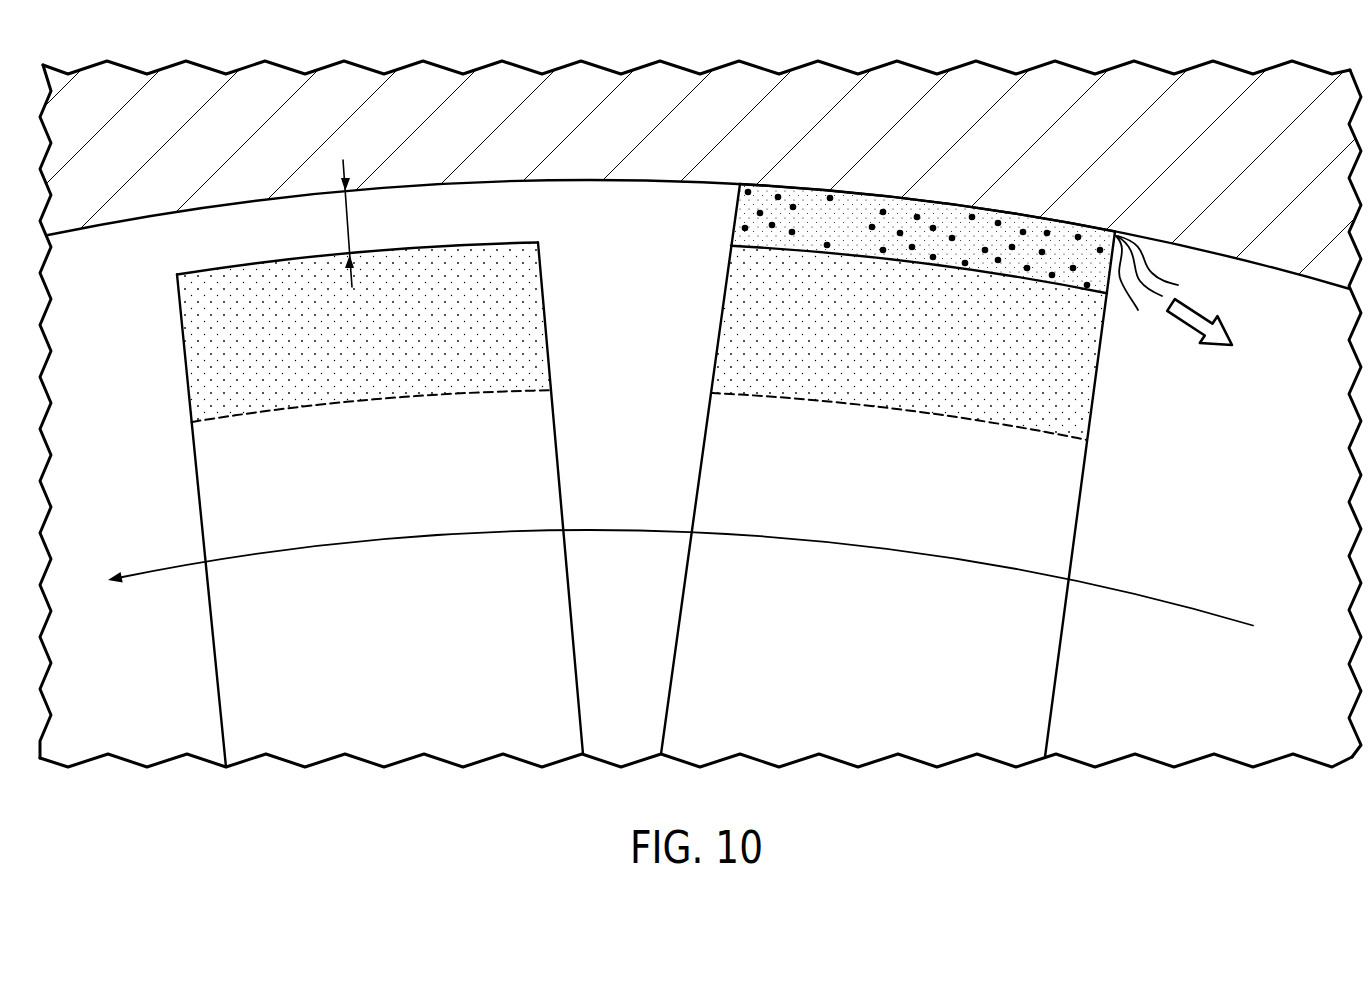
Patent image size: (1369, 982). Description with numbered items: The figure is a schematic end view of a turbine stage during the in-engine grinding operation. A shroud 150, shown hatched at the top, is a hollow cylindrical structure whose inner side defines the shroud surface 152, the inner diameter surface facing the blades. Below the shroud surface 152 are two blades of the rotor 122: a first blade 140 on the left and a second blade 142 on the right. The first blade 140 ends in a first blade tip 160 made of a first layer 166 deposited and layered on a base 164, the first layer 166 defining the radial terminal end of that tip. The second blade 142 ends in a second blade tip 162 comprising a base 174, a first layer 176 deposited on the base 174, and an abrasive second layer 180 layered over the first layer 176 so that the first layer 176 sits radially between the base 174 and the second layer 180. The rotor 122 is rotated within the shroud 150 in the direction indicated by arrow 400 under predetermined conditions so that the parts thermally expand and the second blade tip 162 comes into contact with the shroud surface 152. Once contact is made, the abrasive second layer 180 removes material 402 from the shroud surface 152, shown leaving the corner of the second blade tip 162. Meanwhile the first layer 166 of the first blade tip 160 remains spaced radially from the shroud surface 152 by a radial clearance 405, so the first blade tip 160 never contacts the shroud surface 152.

The rotor 122 is at (1076, 667).
The first blade 140 is at (200, 638).
The second blade 142 is at (688, 465).
The shroud 150 is at (717, 138).
The shroud surface 152 is at (653, 184).
The first blade tip 160 is at (250, 264).
The second blade tip 162 is at (873, 196).
The base 164 is at (412, 606).
The first layer 166 is at (388, 347).
The base 174 is at (902, 517).
The first layer 176 is at (930, 352).
The second layer 180 is at (852, 239).
The arrow 400 is at (625, 533).
The material 402 is at (1140, 322).
The radial clearance 405 is at (352, 218).